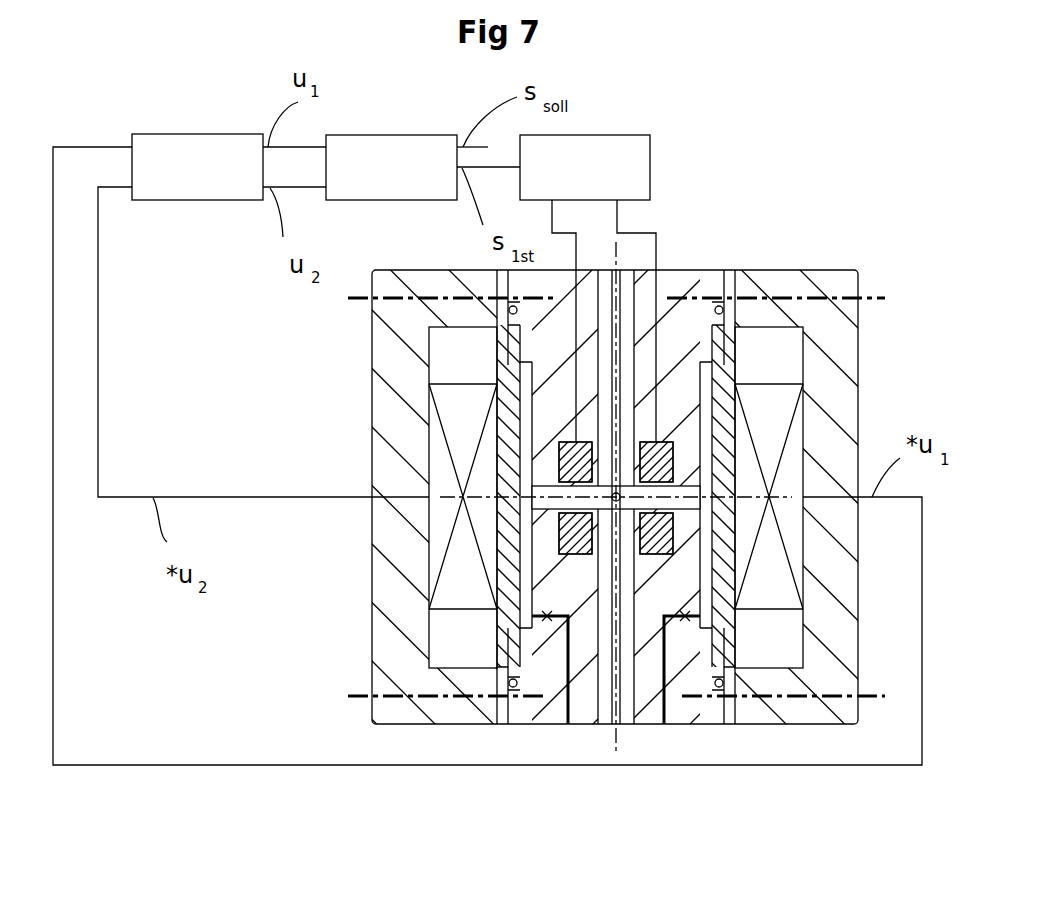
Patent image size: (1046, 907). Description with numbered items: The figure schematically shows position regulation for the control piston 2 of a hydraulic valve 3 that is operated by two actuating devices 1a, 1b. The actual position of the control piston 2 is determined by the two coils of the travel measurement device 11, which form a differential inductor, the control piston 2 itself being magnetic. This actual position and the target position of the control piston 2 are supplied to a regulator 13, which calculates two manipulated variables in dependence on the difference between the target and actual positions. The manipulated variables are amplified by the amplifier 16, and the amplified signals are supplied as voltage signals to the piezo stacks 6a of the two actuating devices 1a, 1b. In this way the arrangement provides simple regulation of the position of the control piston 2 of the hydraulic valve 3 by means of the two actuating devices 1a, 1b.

The amplifier 16 is at (178, 182).
The regulator 13 is at (372, 182).
The travel measurement device 11 is at (566, 182).
The hydraulic valve 3 is at (722, 158).
The actuating device 1b is at (780, 248).
The actuating device 1a is at (443, 735).
The piezo stack 6a is at (763, 405).
The control piston 2 is at (690, 488).